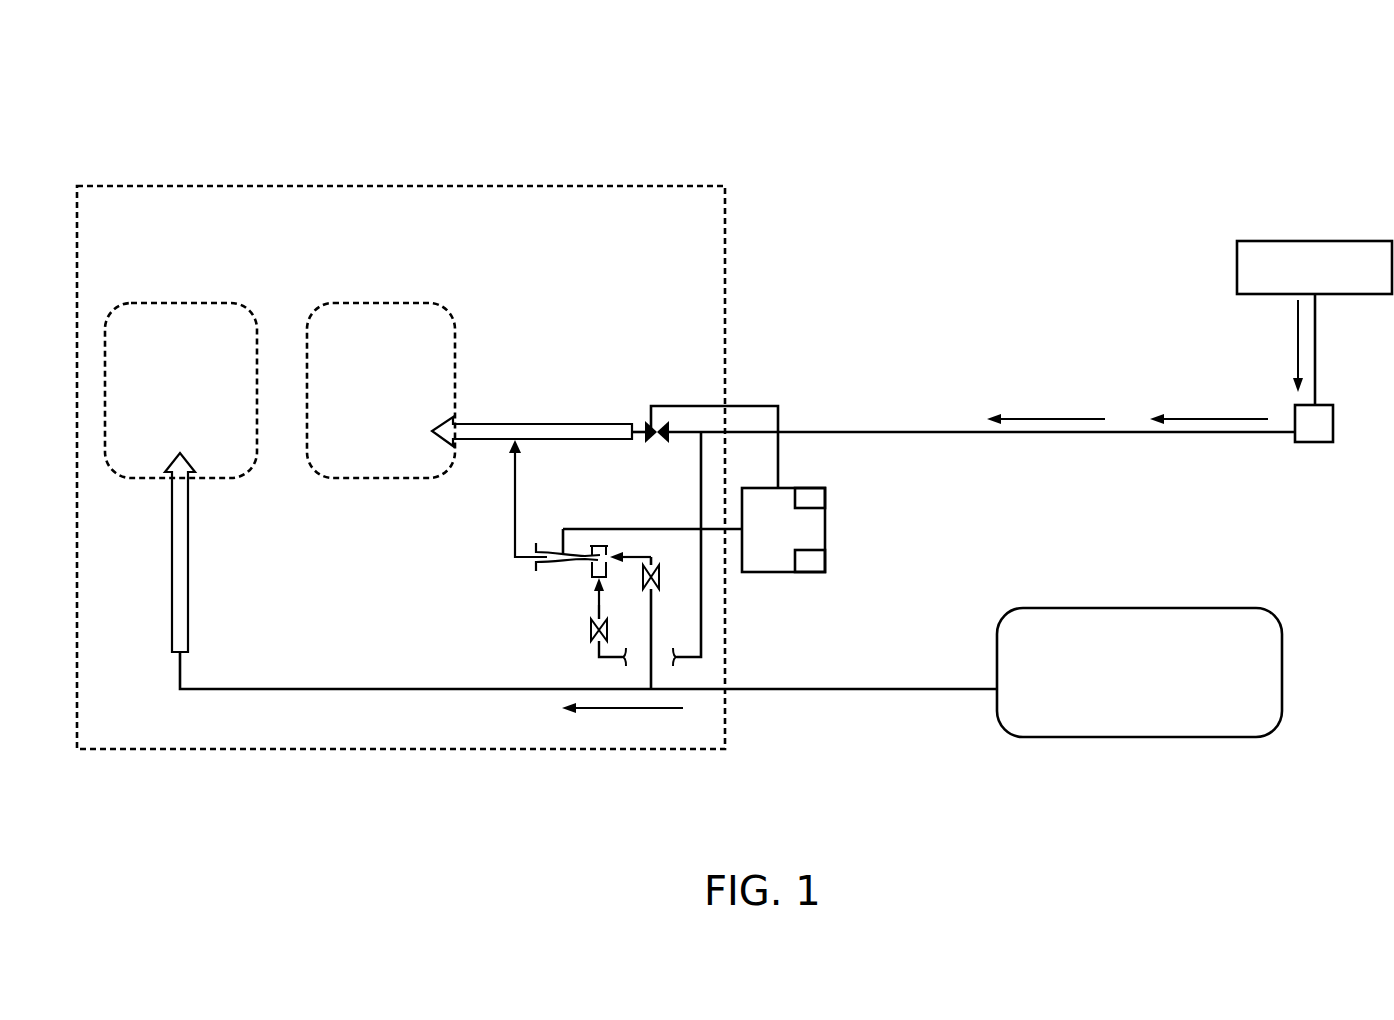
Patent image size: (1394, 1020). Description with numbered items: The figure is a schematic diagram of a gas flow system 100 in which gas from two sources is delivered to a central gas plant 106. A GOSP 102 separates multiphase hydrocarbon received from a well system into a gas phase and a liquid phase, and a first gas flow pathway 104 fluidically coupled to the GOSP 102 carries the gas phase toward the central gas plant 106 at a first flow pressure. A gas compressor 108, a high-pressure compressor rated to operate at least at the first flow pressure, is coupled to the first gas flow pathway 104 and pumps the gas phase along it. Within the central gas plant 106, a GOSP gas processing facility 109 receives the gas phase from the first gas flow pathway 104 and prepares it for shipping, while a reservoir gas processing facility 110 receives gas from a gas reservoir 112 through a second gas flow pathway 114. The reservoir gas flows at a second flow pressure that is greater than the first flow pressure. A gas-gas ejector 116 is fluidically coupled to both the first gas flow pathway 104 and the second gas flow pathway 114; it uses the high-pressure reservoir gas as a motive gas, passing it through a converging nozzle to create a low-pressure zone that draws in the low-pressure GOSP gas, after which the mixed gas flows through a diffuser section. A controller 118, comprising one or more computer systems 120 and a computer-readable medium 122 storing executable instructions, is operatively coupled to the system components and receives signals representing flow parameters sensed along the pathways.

The gas flow system 100 is at (1072, 82).
The GOSP 102 is at (1292, 281).
The first gas flow pathway 104 is at (1098, 433).
The central gas plant 106 is at (371, 251).
The gas compressor 108 is at (1316, 423).
The GOSP gas processing facility 109 is at (359, 404).
The reservoir gas processing facility 110 is at (159, 404).
The gas reservoir 112 is at (1117, 684).
The second gas flow pathway 114 is at (800, 692).
The gas-gas ejector 116 is at (594, 503).
The controller 118 is at (694, 489).
The computer systems 120 is at (812, 497).
The computer-readable medium 122 is at (812, 562).